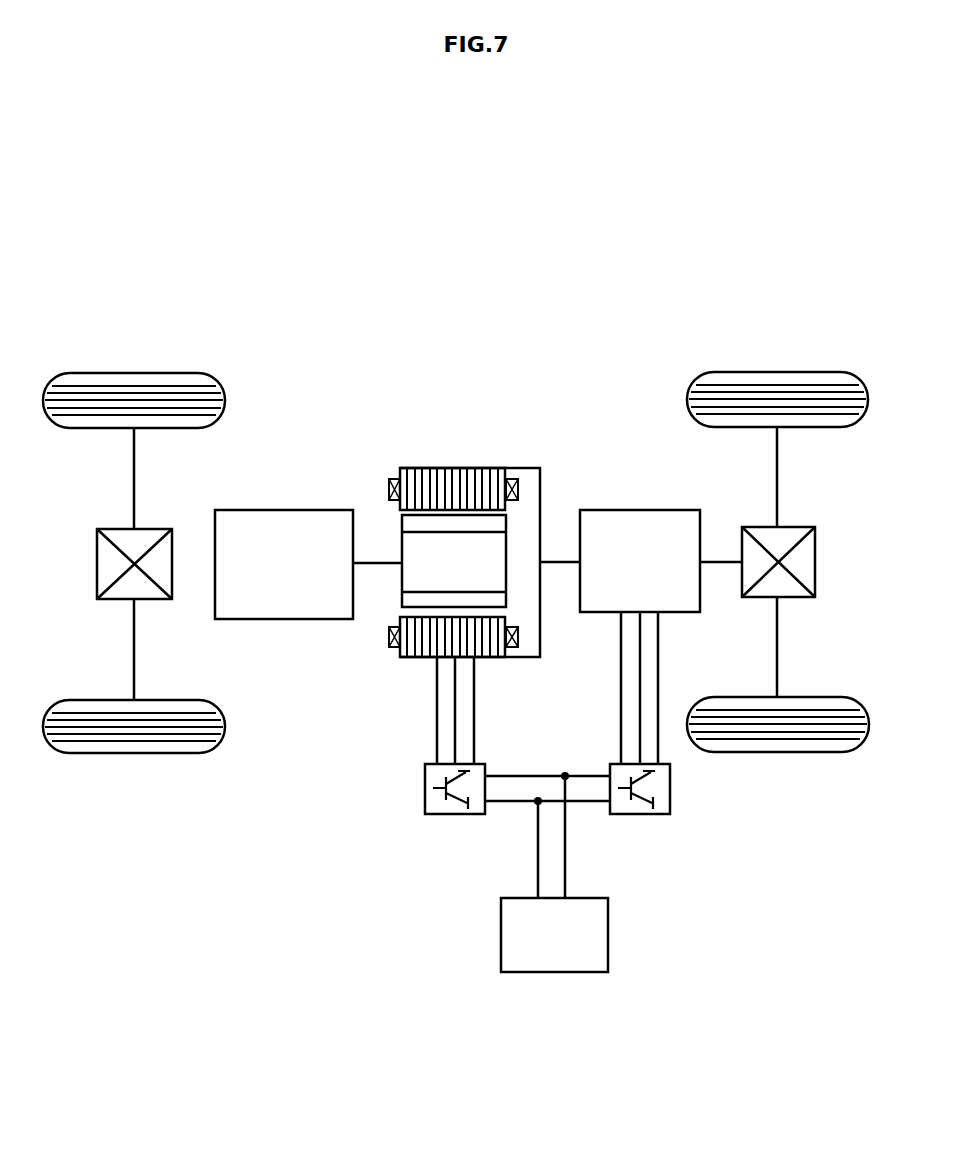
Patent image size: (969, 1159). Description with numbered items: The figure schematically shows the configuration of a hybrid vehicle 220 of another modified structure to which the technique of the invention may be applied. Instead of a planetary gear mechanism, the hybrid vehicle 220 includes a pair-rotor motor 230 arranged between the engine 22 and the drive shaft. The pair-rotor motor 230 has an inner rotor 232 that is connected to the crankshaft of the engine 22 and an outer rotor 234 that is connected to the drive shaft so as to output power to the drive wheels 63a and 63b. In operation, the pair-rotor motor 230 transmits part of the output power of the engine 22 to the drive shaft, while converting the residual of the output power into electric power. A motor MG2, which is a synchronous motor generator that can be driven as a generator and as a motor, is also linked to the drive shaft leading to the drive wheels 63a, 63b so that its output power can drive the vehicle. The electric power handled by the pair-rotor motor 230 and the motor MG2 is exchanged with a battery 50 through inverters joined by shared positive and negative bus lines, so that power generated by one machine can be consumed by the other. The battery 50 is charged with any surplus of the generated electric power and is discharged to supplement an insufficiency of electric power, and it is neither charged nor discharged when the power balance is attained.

The hybrid vehicle 220 is at (497, 238).
The pair-rotor motor 230 is at (385, 323).
The inner rotor 232 is at (398, 548).
The outer rotor 234 is at (452, 468).
The engine 22 is at (283, 619).
The motor MG2 is at (640, 510).
The drive wheel 63a is at (777, 372).
The drive wheel 63b is at (777, 752).
The battery 50 is at (608, 935).